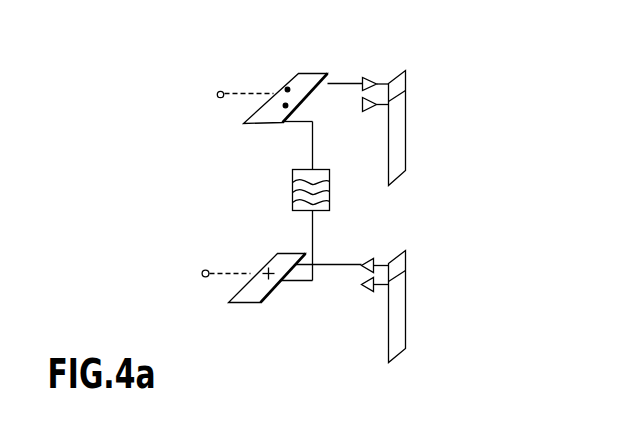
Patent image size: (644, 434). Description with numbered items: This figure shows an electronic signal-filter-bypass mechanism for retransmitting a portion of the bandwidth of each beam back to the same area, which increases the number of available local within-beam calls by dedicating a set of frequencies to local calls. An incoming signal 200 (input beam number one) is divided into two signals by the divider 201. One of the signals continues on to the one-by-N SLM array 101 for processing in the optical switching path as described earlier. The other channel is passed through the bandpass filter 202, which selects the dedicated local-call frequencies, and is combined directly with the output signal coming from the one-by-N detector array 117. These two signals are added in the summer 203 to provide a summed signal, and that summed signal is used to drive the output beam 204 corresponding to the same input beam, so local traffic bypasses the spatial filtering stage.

The divider 201 is at (363, 48).
The incoming signal 200 is at (167, 103).
The 1×N SLM array 101 is at (408, 125).
The bandpass filter 202 is at (292, 182).
The summer 203 is at (278, 313).
The output beam 204 is at (154, 284).
The 1×N detector array 117 is at (408, 305).